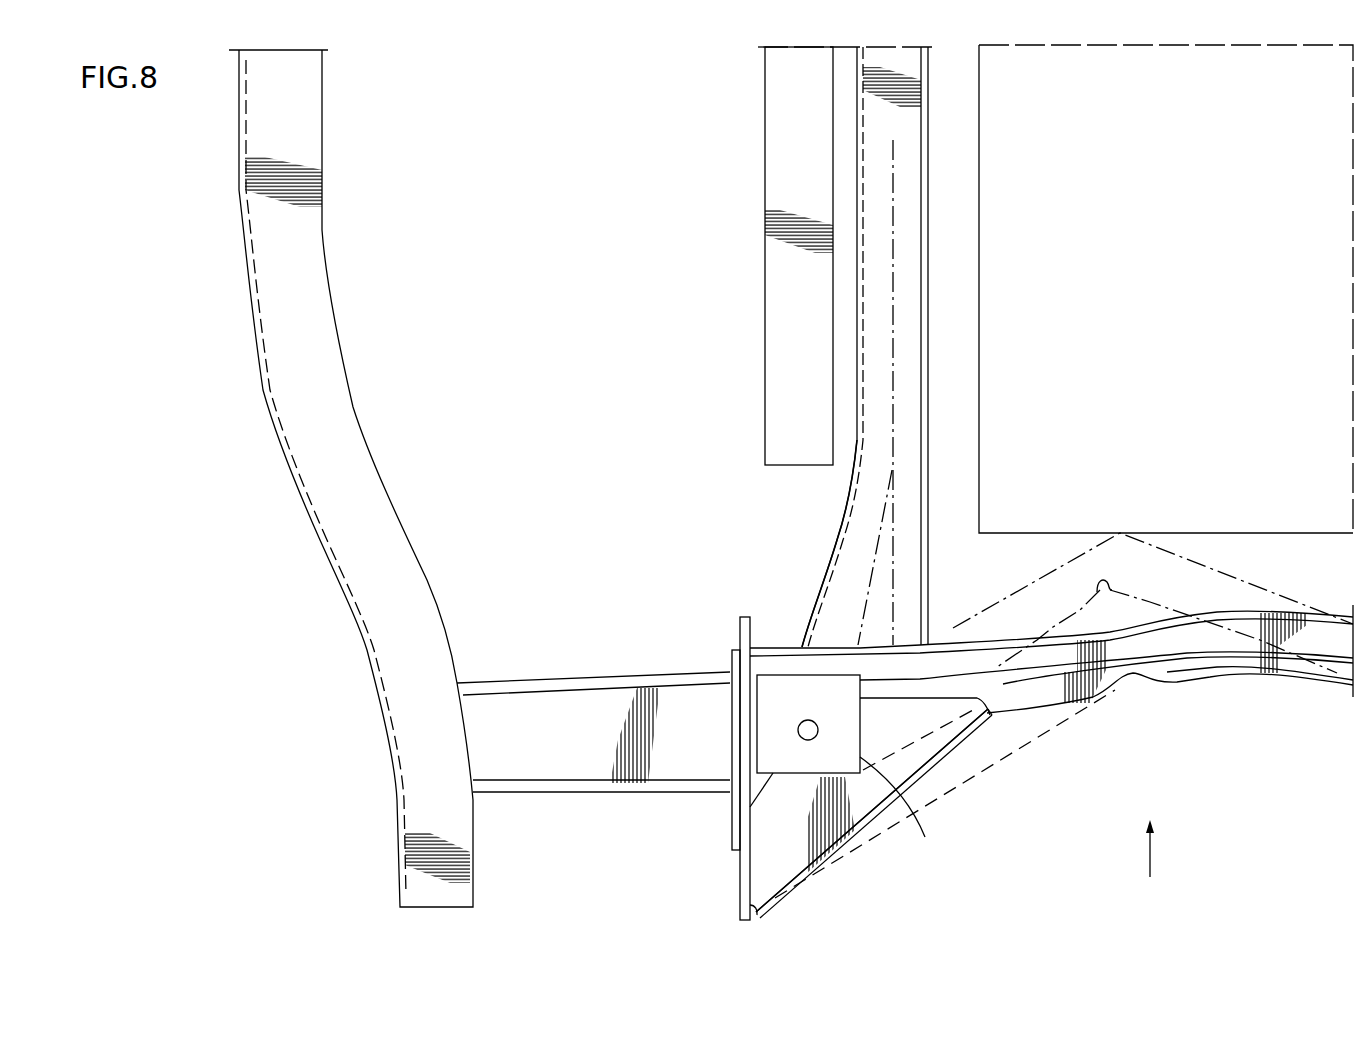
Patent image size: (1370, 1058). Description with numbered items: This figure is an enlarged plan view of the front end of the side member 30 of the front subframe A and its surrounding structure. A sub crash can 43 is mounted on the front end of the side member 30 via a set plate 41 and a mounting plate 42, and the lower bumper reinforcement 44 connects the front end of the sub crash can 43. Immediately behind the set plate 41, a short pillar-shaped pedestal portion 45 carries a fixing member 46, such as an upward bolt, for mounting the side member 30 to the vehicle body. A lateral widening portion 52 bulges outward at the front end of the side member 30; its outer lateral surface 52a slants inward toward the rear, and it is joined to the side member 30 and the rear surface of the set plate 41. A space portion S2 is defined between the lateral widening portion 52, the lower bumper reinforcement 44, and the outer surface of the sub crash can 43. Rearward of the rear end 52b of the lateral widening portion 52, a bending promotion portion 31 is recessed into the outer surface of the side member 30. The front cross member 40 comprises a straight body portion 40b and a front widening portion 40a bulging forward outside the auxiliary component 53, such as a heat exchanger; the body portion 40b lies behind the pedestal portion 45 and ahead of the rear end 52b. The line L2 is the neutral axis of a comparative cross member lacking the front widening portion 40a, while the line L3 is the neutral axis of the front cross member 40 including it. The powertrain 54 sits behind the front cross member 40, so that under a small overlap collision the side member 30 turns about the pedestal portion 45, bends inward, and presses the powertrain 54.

The front side member 30 is at (1263, 677).
The bending promotion portion 31 is at (1135, 680).
The front cross member 40 is at (865, 347).
The front widening portion 40a is at (810, 617).
The body portion 40b is at (910, 208).
The set plate 41 is at (745, 905).
The mounting plate 42 is at (732, 832).
The sub crash can 43 is at (538, 683).
The lower bumper reinforcement 44 is at (240, 253).
The pedestal portion 45 is at (925, 837).
The fixing member 46 is at (818, 730).
The lateral widening portion 52 is at (874, 835).
The outer lateral surface 52a is at (873, 817).
The rear end 52b is at (990, 715).
The auxiliary component 53 is at (765, 130).
The powertrain 54 is at (1180, 267).
The neutral axis of comparative front cross member L2 is at (893, 305).
The neutral axis of front cross member L3 is at (867, 553).
The space portion S2 is at (585, 852).
The front subframe A is at (1153, 860).